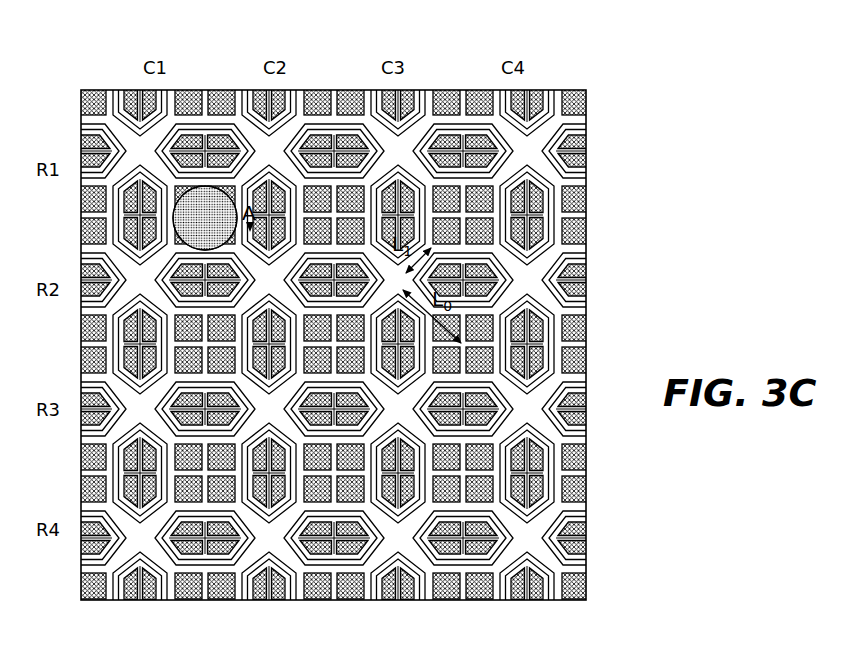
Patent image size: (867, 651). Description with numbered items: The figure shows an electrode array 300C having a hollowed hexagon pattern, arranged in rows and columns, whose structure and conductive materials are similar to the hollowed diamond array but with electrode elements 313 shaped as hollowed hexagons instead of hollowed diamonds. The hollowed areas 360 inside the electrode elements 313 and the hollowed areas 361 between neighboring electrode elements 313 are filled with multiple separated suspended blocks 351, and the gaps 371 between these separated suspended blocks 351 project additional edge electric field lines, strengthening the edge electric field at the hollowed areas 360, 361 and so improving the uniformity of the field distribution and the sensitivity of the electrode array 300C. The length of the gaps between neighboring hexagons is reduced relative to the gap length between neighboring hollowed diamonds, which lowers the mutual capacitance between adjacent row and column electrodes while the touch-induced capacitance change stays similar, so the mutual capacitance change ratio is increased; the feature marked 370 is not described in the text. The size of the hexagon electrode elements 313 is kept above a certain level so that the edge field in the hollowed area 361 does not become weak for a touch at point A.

The electrode array 300C is at (352, 342).
The electrode elements 313 is at (495, 262).
The gap 370 is at (547, 302).
The hollowed areas inside the electrode elements 360 is at (493, 400).
The hollowed areas between the electrode elements 361 is at (487, 483).
The gaps 371 is at (262, 468).
The suspended blocks 351 is at (350, 483).